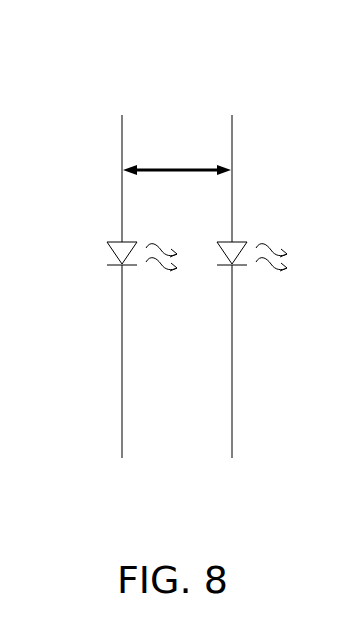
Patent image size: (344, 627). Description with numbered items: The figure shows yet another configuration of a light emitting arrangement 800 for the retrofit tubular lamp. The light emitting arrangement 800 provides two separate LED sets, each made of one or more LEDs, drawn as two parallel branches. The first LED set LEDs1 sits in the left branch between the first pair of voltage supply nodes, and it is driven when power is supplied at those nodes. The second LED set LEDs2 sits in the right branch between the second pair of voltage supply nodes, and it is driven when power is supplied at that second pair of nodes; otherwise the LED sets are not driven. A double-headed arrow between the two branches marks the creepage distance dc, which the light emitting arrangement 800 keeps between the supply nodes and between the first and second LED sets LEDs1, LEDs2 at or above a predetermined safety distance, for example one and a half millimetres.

The light emitting arrangement 800 is at (163, 302).
The first LED set LEDs1 is at (152, 241).
The second LED set LEDs2 is at (262, 241).
The creepage distance dc is at (177, 157).